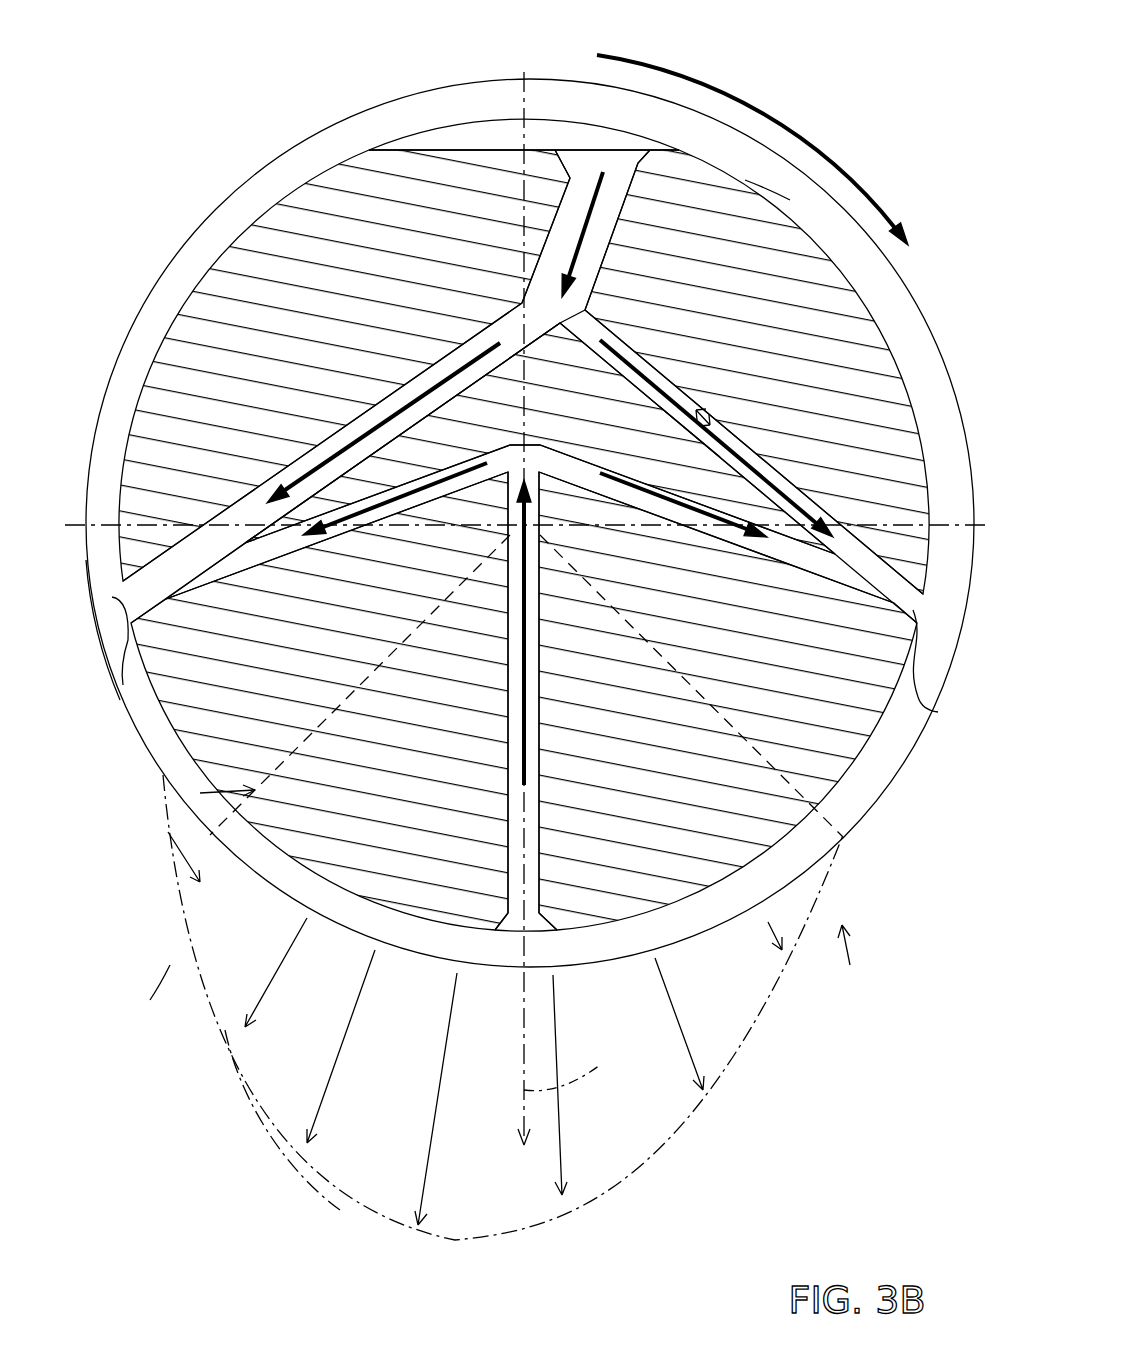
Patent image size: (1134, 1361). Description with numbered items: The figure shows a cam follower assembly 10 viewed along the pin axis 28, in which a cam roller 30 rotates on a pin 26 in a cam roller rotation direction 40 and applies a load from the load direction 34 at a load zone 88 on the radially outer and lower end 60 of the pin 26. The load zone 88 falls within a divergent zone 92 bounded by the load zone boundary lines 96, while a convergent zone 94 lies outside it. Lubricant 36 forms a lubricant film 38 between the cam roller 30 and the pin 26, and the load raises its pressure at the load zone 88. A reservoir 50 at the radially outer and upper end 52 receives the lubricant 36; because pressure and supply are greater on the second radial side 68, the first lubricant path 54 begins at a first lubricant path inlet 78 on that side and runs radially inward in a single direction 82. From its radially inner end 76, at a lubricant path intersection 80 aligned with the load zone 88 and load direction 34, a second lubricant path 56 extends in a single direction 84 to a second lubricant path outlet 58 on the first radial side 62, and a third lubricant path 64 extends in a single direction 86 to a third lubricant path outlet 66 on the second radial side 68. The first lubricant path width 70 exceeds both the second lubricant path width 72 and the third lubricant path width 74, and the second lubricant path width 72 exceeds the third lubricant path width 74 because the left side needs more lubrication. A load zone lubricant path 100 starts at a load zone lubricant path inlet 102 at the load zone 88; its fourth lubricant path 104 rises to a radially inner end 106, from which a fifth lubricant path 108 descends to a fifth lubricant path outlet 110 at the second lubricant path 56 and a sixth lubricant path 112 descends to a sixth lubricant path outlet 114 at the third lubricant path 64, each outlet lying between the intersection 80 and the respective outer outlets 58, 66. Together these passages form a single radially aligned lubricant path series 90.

The cam follower assembly 10 is at (766, 54).
The pin 26 is at (265, 240).
The pin axis 28 is at (545, 540).
The cam roller 30 is at (372, 120).
The load direction 34 is at (565, 1082).
The lubricant 36 is at (540, 262).
The lubricant film 38 is at (150, 710).
The cam roller rotation direction 40 is at (750, 105).
The reservoir 50 is at (480, 150).
The radially outer and upper end 52 is at (762, 176).
The first lubricant path 54 is at (625, 270).
The second lubricant path 56 is at (392, 390).
The second lubricant path outlet 58 is at (115, 620).
The radially outer and lower end 60 is at (148, 863).
The first radial side 62 is at (178, 945).
The third lubricant path 64 is at (733, 434).
The third lubricant path outlet 66 is at (905, 600).
The second radial side 68 is at (848, 985).
The first lubricant path width 70 is at (548, 182).
The second lubricant path width 72 is at (417, 374).
The third lubricant path width 74 is at (700, 407).
The radially inner end 76 is at (612, 318).
The first lubricant path inlet 78 is at (590, 150).
The lubricant path intersection 80 is at (630, 290).
The single direction 82 is at (562, 250).
The single direction 84 is at (303, 460).
The single direction 86 is at (678, 426).
The load zone 88 is at (273, 1133).
The lubricant path series 90 is at (172, 765).
The divergent zone 92 is at (611, 828).
The convergent zone 94 is at (804, 323).
The load zone boundary lines 96 is at (350, 698).
The load zone lubricant path 100 is at (506, 683).
The load zone lubricant path inlet 102 is at (550, 920).
The fourth lubricant path 104 is at (518, 632).
The radially inner end 106 is at (543, 444).
The fifth lubricant path 108 is at (427, 476).
The fifth lubricant path outlet 110 is at (255, 540).
The sixth lubricant path 112 is at (617, 477).
The sixth lubricant path outlet 114 is at (925, 700).